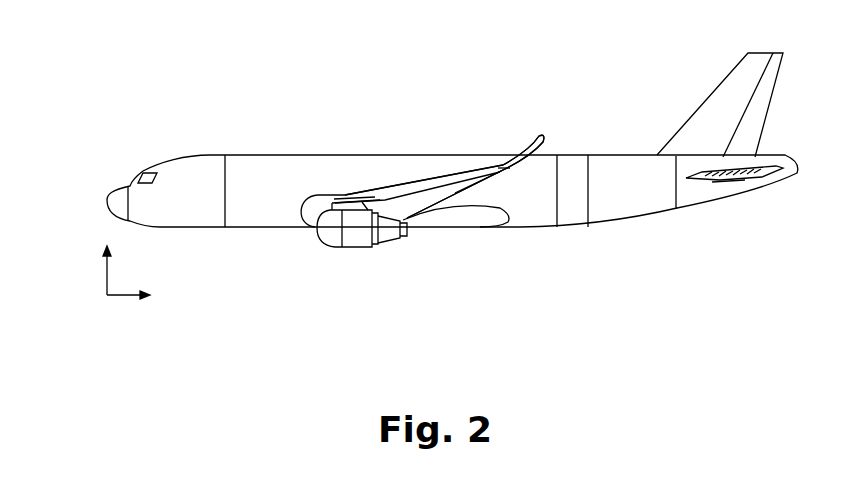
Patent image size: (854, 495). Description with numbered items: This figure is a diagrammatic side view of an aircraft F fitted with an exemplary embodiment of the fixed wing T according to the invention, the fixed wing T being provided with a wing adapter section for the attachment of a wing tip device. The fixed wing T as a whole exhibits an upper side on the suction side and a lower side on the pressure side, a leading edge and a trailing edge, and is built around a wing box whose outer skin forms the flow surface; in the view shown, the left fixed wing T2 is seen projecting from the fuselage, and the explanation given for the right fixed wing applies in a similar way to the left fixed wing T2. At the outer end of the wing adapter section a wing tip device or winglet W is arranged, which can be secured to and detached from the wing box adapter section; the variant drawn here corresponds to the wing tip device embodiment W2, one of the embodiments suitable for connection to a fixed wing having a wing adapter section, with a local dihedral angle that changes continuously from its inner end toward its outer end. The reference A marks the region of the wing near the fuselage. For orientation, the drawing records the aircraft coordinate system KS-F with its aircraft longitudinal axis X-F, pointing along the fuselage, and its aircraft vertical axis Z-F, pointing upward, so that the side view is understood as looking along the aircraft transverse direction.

The aircraft F is at (374, 128).
The wing tip device W is at (561, 138).
The wing tip device embodiment W2 is at (540, 137).
The fixed wing T is at (420, 178).
The left fixed wing T2 is at (455, 191).
The axis A is at (505, 168).
The aircraft coordinate system KS-F is at (182, 289).
The aircraft vertical axis Z-F is at (81, 270).
The aircraft longitudinal axis X-F is at (159, 278).